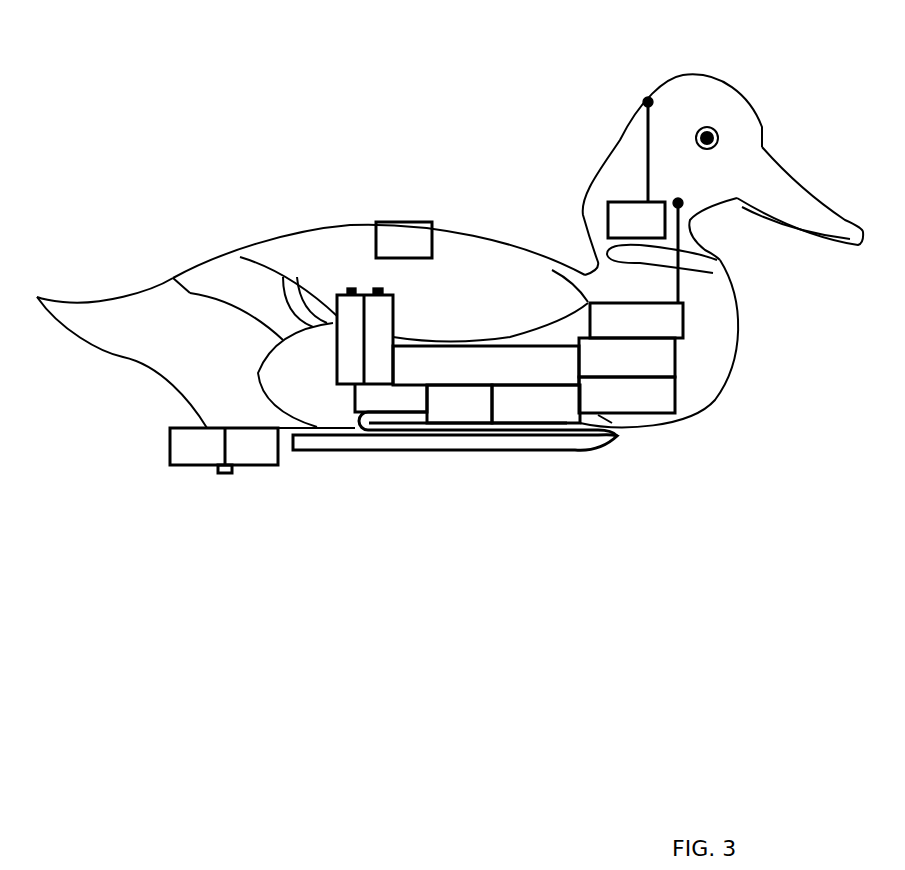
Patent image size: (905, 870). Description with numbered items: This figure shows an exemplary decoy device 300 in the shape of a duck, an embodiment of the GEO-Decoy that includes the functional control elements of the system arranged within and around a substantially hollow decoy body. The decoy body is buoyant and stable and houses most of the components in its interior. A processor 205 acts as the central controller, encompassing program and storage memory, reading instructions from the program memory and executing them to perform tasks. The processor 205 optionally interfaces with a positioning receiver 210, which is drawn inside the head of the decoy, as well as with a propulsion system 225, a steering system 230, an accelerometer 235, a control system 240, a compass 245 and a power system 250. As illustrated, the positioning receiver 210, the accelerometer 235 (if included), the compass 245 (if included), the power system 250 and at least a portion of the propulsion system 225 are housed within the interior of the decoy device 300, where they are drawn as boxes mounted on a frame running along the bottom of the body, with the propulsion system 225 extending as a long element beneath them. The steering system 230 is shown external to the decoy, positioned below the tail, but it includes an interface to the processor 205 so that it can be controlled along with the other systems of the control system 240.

The waterfowl decoy system 300 is at (385, 40).
The processor 205 is at (507, 372).
The positioning receiver 210 is at (623, 202).
The propulsion system 225 is at (373, 443).
The steering system 230 is at (260, 467).
The accelerometer 235 is at (677, 393).
The control system 240 is at (673, 322).
The compass 245 is at (397, 220).
The power system 250 is at (333, 318).